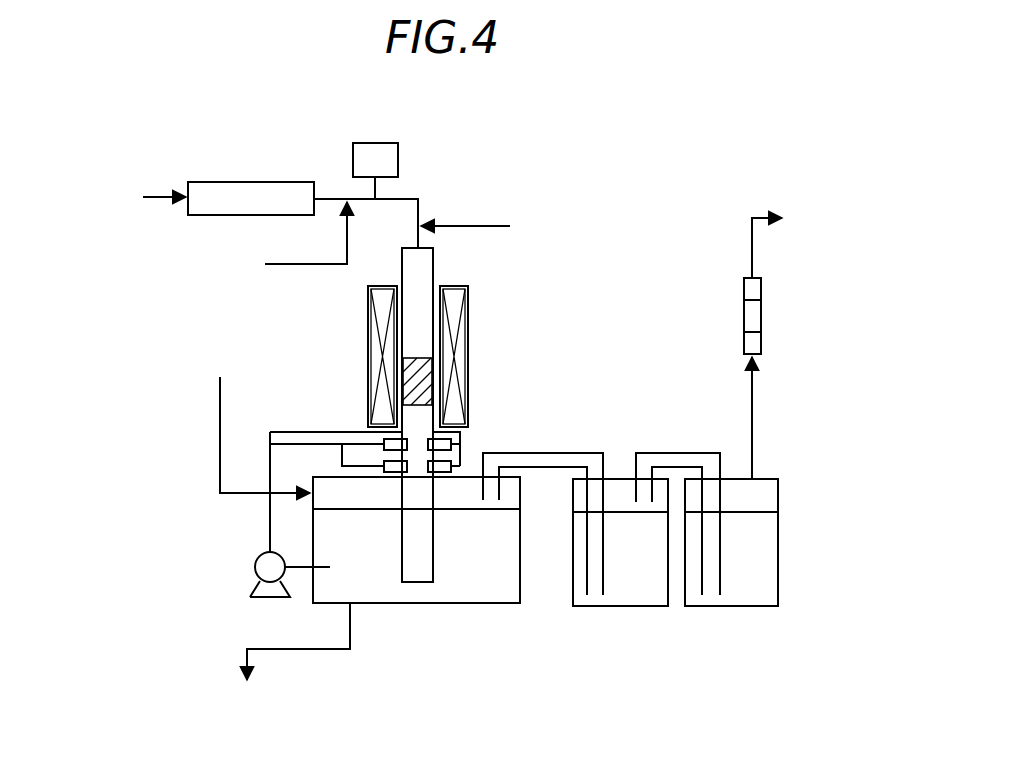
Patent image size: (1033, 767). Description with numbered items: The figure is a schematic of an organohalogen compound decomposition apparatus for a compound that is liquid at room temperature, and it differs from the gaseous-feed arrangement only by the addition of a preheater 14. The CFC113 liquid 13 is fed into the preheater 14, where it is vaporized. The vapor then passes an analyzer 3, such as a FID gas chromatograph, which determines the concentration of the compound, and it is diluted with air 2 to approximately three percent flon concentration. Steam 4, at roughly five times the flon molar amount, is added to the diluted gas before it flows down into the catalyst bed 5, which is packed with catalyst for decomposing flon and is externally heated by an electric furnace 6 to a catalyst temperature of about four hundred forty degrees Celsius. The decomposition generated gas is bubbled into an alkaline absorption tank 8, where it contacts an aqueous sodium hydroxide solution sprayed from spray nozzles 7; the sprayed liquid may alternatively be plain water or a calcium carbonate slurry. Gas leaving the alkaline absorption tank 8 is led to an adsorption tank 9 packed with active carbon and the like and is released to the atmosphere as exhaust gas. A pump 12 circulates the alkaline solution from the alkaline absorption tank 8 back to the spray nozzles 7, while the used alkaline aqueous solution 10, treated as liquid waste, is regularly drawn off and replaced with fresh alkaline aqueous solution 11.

The air 2 is at (276, 238).
The analyzer 3 is at (398, 160).
The steam 4 is at (508, 227).
The catalyst bed 5 is at (430, 370).
The electric furnace 6 is at (468, 390).
The spray nozzles 7 is at (452, 464).
The alkaline absorption tank 8 is at (663, 640).
The adsorption tank 9 is at (761, 318).
The used alkaline aqueous solution 10 is at (277, 670).
The fresh alkaline aqueous solution 11 is at (212, 412).
The pump 12 is at (258, 590).
The CFC113 liquid 13 is at (110, 197).
The preheater 14 is at (246, 182).